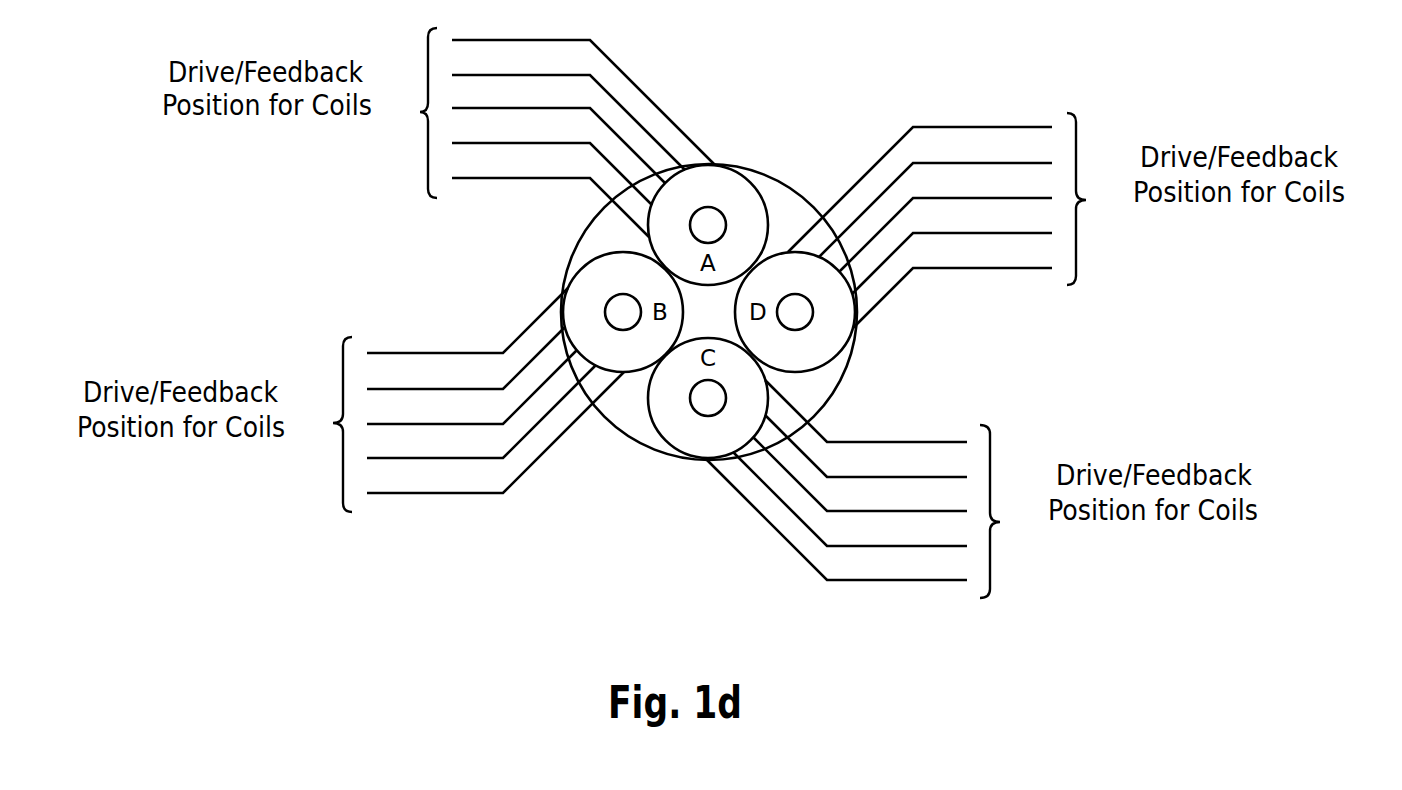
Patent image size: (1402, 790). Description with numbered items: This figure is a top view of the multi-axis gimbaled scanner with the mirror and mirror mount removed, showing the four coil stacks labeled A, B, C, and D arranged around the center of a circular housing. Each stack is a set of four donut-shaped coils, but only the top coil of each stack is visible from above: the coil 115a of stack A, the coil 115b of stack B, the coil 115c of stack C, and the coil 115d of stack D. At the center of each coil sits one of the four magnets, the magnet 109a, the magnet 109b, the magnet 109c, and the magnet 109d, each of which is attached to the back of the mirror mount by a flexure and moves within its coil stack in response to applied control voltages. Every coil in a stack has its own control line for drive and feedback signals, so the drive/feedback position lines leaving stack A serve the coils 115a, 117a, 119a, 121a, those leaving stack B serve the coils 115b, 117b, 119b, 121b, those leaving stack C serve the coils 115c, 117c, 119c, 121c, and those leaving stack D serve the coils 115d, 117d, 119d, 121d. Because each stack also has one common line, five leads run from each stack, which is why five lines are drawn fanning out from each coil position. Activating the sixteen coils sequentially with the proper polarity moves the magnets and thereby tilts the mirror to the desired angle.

The magnet 109a is at (708, 203).
The magnet 109b is at (623, 243).
The magnet 109c is at (692, 413).
The magnet 109d is at (810, 330).
The coil 115a is at (772, 223).
The coil 115b is at (604, 309).
The coil 115c is at (642, 397).
The coil 115d is at (793, 378).
The coil 117a is at (455, 105).
The coil 119a is at (469, 145).
The coil 121a is at (502, 180).
The coil 117b is at (340, 383).
The coil 119b is at (383, 414).
The coil 121b is at (445, 429).
The coil 117c is at (960, 471).
The coil 119c is at (992, 499).
The coil 121c is at (1002, 516).
The coil 117d is at (1014, 192).
The coil 119d is at (1078, 235).
The coil 121d is at (1120, 269).